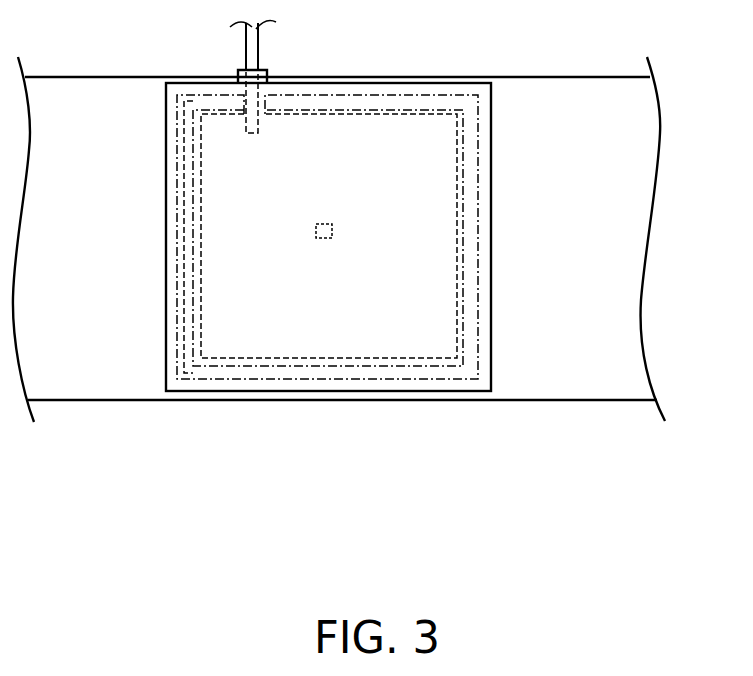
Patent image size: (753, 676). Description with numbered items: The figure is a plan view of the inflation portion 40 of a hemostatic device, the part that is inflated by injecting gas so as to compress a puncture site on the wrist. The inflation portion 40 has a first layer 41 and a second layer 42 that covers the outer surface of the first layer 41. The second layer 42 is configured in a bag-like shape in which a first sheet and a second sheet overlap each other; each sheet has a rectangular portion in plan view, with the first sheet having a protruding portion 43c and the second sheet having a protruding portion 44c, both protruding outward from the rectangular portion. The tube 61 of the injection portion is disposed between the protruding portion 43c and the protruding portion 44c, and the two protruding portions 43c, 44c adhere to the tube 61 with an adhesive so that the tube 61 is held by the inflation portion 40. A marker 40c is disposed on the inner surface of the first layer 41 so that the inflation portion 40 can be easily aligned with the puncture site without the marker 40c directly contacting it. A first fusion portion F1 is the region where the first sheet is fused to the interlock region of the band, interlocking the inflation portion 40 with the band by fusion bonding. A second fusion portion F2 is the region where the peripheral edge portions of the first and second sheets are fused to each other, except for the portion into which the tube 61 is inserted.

The inflation portion 40 is at (491, 368).
The marker 40c is at (325, 224).
The first layer 41 is at (293, 358).
The second layer 42 is at (490, 305).
The protruding portion 43c is at (240, 70).
The protruding portion 44c is at (310, 199).
The tube 61 is at (262, 50).
The first fusion portion F1 is at (188, 365).
The second fusion portion F2 is at (417, 368).